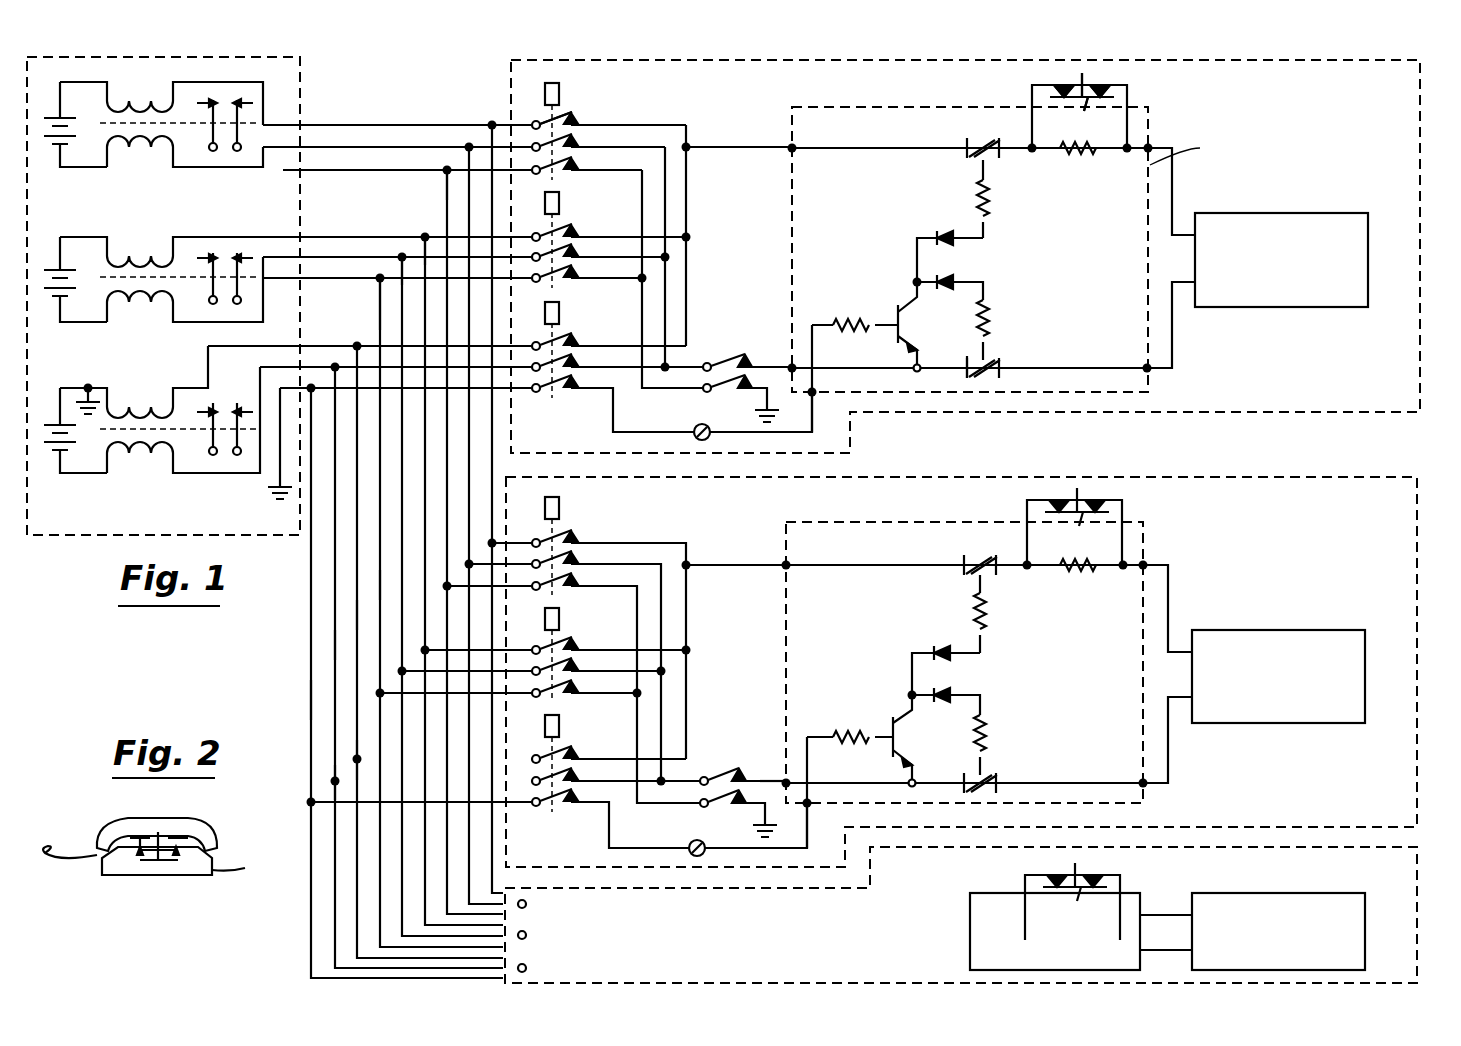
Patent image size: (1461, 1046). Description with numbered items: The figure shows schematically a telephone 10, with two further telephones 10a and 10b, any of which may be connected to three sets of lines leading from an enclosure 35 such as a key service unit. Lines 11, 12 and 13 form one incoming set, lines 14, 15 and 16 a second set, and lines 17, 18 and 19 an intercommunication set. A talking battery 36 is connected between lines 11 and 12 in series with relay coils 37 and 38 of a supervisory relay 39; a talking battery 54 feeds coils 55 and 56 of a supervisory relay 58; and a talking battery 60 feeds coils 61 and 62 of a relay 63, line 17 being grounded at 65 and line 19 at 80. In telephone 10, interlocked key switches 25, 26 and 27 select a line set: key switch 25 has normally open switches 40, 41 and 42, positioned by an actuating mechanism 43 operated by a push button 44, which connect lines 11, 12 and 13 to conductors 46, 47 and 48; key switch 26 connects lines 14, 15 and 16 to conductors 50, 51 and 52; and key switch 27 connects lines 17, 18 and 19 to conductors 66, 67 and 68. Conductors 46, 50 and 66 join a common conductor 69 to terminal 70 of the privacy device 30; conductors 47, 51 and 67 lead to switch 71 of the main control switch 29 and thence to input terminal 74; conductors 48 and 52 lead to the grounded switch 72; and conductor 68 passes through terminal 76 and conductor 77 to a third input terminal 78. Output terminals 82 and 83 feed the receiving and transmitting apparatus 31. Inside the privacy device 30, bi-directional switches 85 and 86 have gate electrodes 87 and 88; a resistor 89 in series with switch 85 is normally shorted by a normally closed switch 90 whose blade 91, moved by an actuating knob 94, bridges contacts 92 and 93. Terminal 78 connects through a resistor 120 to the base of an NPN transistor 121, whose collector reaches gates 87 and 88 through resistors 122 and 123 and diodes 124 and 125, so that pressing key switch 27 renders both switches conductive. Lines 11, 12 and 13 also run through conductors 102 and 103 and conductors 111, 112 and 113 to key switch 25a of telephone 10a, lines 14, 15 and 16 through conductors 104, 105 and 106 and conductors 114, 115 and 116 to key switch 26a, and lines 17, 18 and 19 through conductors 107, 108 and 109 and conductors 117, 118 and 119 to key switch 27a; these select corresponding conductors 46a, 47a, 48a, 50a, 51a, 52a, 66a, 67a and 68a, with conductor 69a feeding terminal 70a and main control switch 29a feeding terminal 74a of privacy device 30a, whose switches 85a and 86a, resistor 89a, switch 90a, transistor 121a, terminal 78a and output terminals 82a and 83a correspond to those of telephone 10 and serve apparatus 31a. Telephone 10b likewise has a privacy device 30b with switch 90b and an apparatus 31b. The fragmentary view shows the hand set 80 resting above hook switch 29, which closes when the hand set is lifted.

In FIG. 1, the telephone 10 is at (1275, 416).
In FIG. 1, the telephone 10a is at (1342, 472).
In FIG. 1, the telephone 10b is at (1325, 845).
In FIG. 1, the line 11 is at (366, 124).
In FIG. 1, the line 12 is at (318, 147).
In FIG. 1, the line 13 is at (358, 171).
In FIG. 1, the line 14 is at (366, 236).
In FIG. 1, the line 15 is at (342, 256).
In FIG. 1, the line 16 is at (345, 279).
In FIG. 1, the line 17 is at (336, 345).
In FIG. 1, the line 18 is at (328, 364).
In FIG. 1, the line 19 is at (330, 388).
In FIG. 1, the key switch 25 is at (625, 92).
In FIG. 1, the key switch 25a is at (582, 510).
In FIG. 1, the key switch 26 is at (584, 216).
In FIG. 1, the key switch 26a is at (566, 612).
In FIG. 1, the key switch 27 is at (572, 320).
In FIG. 1, the key switch 27a is at (565, 728).
In FIG. 1, the main control switch 29 is at (739, 372).
In FIG. 2, the main control switch 29 is at (178, 872).
In FIG. 1, the main control switch 29a is at (720, 755).
In FIG. 1, the privacy device 30 is at (790, 280).
In FIG. 1, the privacy device 30a is at (784, 645).
In FIG. 1, the privacy device 30b is at (968, 935).
In FIG. 1, the receiving and transmitting apparatus 31 is at (1318, 212).
In FIG. 1, the receiving and transmitting apparatus 31a is at (1285, 724).
In FIG. 1, the receiving and transmitting apparatus 31b is at (1362, 898).
In FIG. 1, the enclosure 35 is at (302, 72).
In FIG. 1, the talking battery 36 is at (55, 150).
In FIG. 1, the relay coil 37 is at (135, 100).
In FIG. 1, the relay coil 38 is at (148, 138).
In FIG. 1, the supervisory relay 39 is at (192, 150).
In FIG. 1, the switch 40 is at (578, 120).
In FIG. 1, the switch 41 is at (580, 146).
In FIG. 1, the switch 42 is at (580, 168).
In FIG. 1, the actuating mechanism 43 is at (565, 112).
In FIG. 1, the push button 44 is at (562, 90).
In FIG. 1, the conductor 46 is at (652, 124).
In FIG. 1, the conductor 46a is at (603, 542).
In FIG. 1, the conductor 47 is at (667, 180).
In FIG. 1, the conductor 47a is at (644, 562).
In FIG. 1, the conductor 48 is at (636, 175).
In FIG. 1, the conductor 48a is at (596, 586).
In FIG. 1, the conductor 50 is at (583, 236).
In FIG. 1, the switch contact 50a is at (582, 648).
In FIG. 1, the conductor 51 is at (586, 256).
In FIG. 1, the switch contact 51a is at (586, 672).
In FIG. 1, the conductor 52 is at (613, 281).
In FIG. 1, the switch contact 52a is at (584, 694).
In FIG. 1, the talking battery 54 is at (48, 268).
In FIG. 1, the relay coil 55 is at (150, 252).
In FIG. 1, the relay coil 56 is at (150, 312).
In FIG. 1, the supervisory relay 58 is at (196, 248).
In FIG. 1, the talking battery 60 is at (45, 422).
In FIG. 1, the coil 61 is at (143, 408).
In FIG. 1, the coil 62 is at (145, 470).
In FIG. 1, the relay 63 is at (200, 398).
In FIG. 1, the ground connection 65 is at (90, 398).
In FIG. 1, the conductor 66 is at (585, 345).
In FIG. 1, the switch contact 66a is at (580, 758).
In FIG. 1, the conductor 67 is at (585, 368).
In FIG. 1, the switch contact 67a is at (582, 782).
In FIG. 1, the conductor 68 is at (603, 394).
In FIG. 1, the switch contact 68a is at (612, 810).
In FIG. 1, the common conductor 69 is at (766, 146).
In FIG. 1, the conductor 69a is at (770, 563).
In FIG. 1, the terminal 70 is at (794, 153).
In FIG. 1, the input terminal 70a is at (780, 570).
In FIG. 1, the switch 71 is at (709, 362).
In FIG. 1, the switch 72 is at (730, 392).
In FIG. 1, the input terminal 74 is at (790, 362).
In FIG. 1, the input terminal 74a is at (786, 778).
In FIG. 1, the terminal 76 is at (694, 430).
In FIG. 1, the conductor 77 is at (810, 432).
In FIG. 1, the input terminal 78 is at (815, 392).
In FIG. 1, the junction 78a is at (810, 805).
In FIG. 1, the ground connection; hand set 80 is at (268, 492).
In FIG. 2, the ground connection; hand set 80 is at (178, 818).
In FIG. 1, the output terminal 82 is at (1152, 146).
In FIG. 1, the terminal 82a is at (1148, 563).
In FIG. 1, the output terminal 83 is at (1152, 372).
In FIG. 1, the terminal 83a is at (1148, 788).
In FIG. 1, the bi-directional electronic switch 85 is at (1003, 162).
In FIG. 1, the switch 85a is at (966, 578).
In FIG. 1, the bi-directional electronic switch 86 is at (1003, 360).
In FIG. 1, the switch 86a is at (990, 778).
In FIG. 1, the gate electrode 87 is at (982, 167).
In FIG. 1, the gate electrode 88 is at (995, 360).
In FIG. 1, the resistor 89 is at (1078, 153).
In FIG. 1, the resistor 89a is at (1078, 570).
In FIG. 1, the normally closed switch 90 is at (1112, 80).
In FIG. 1, the triac 90a is at (1105, 495).
In FIG. 1, the triac 90b is at (1045, 868).
In FIG. 1, the switch blade 91 is at (1086, 105).
In FIG. 1, the contact 92 is at (1055, 90).
In FIG. 1, the contact 93 is at (1105, 92).
In FIG. 1, the actuating knob 94 is at (1080, 85).
In FIG. 1, the conductor 102 is at (466, 164).
In FIG. 1, the conductor 103 is at (444, 218).
In FIG. 1, the conductor 104 is at (415, 246).
In FIG. 1, the conductor 105 is at (378, 308).
In FIG. 1, the conductor 106 is at (378, 585).
In FIG. 1, the conductor 107 is at (355, 618).
In FIG. 1, the conductor 108 is at (333, 650).
In FIG. 1, the conductor 109 is at (309, 702).
In FIG. 1, the conductor 111 is at (500, 540).
In FIG. 1, the conductor 112 is at (502, 560).
In FIG. 1, the conductor 113 is at (500, 586).
In FIG. 1, the conductor 114 is at (498, 648).
In FIG. 1, the conductor 115 is at (500, 670).
In FIG. 1, the conductor 116 is at (499, 693).
In FIG. 1, the conductor 117 is at (362, 756).
In FIG. 1, the conductor 118 is at (345, 780).
In FIG. 1, the conductor 119 is at (498, 806).
In FIG. 1, the resistor 120 is at (852, 318).
In FIG. 1, the NPN transistor 121 is at (912, 324).
In FIG. 1, the transistor 121a is at (888, 710).
In FIG. 1, the resistor 122 is at (989, 200).
In FIG. 1, the resistor 123 is at (988, 320).
In FIG. 1, the diode 124 is at (950, 232).
In FIG. 1, the diode 125 is at (955, 277).